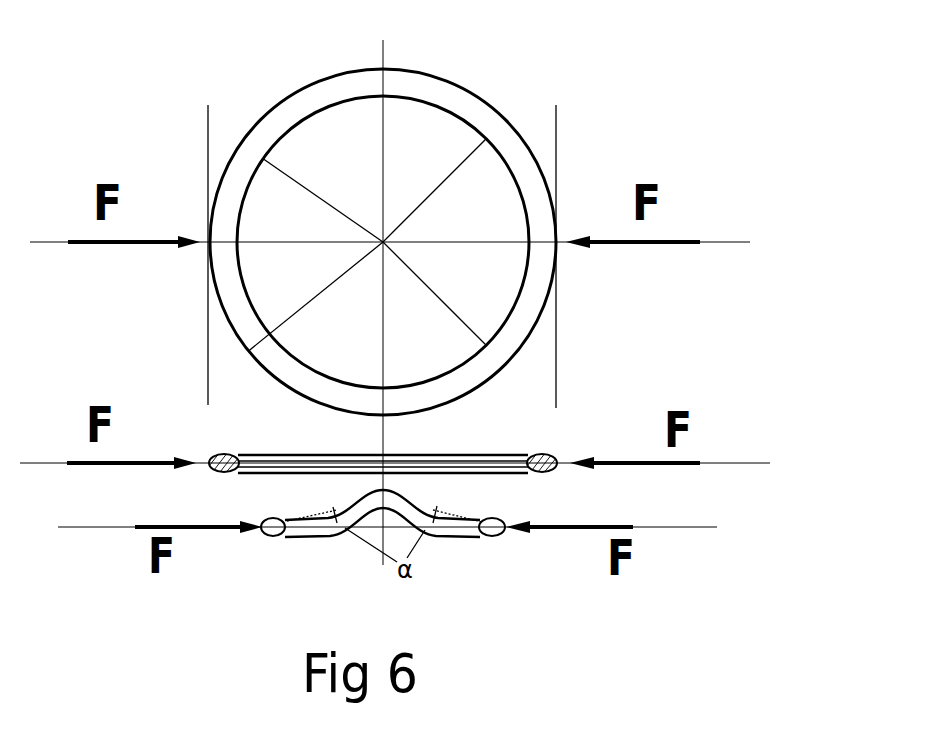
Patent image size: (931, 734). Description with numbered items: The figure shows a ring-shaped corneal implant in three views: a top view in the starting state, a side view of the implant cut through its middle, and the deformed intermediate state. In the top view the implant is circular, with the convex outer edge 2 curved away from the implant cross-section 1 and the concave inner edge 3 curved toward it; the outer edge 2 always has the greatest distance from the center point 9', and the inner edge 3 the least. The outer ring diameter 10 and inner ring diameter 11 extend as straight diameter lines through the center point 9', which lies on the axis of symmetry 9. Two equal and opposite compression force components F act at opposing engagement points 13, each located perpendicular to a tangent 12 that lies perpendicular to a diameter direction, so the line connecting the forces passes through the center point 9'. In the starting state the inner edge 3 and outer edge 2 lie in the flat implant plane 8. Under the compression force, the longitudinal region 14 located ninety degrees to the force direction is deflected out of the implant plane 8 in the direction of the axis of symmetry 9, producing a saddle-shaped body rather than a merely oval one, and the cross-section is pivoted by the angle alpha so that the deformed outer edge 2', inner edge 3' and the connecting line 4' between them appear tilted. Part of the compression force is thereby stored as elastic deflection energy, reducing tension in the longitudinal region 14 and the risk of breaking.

The implant cross-section 1 is at (276, 106).
The outer edge without force action 2 is at (388, 388).
The outer edge with force action 2' is at (385, 562).
The inner edge without force action 3 is at (383, 297).
The inner edge with force action 3' is at (383, 506).
The connecting line between outer edge and inner edge with force action 4' is at (390, 539).
The implant plane 8 is at (742, 462).
The axis of symmetry of the implant 9 is at (412, 317).
The center point of the implant 9' is at (401, 301).
The outer ring diameter 10 is at (316, 296).
The inner ring diameter 11 is at (323, 199).
The tangent of the implant 12 is at (208, 142).
The engagement point of the compression force 13 is at (207, 243).
The longitudinal region 14 is at (397, 83).